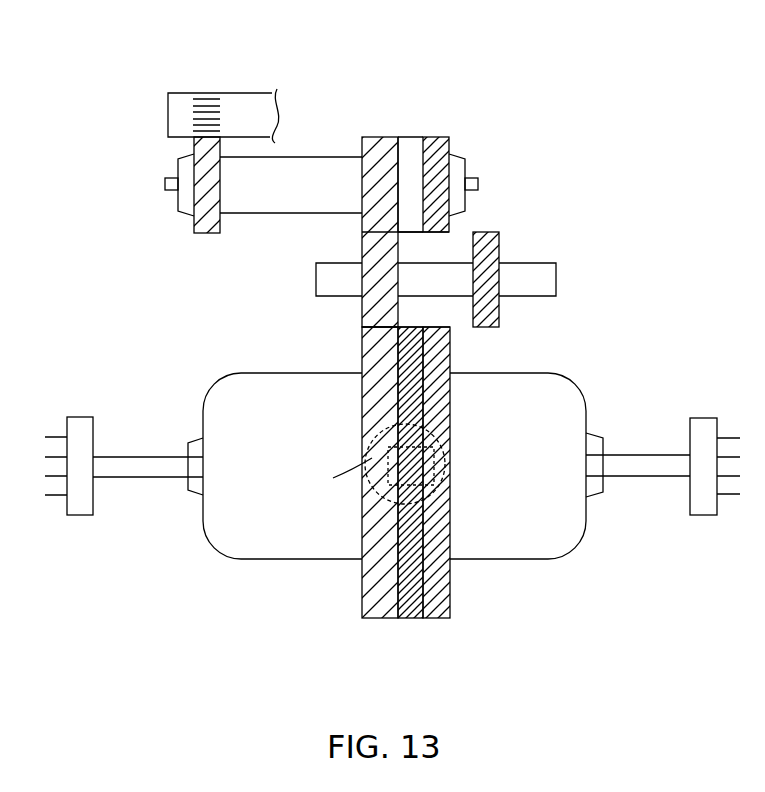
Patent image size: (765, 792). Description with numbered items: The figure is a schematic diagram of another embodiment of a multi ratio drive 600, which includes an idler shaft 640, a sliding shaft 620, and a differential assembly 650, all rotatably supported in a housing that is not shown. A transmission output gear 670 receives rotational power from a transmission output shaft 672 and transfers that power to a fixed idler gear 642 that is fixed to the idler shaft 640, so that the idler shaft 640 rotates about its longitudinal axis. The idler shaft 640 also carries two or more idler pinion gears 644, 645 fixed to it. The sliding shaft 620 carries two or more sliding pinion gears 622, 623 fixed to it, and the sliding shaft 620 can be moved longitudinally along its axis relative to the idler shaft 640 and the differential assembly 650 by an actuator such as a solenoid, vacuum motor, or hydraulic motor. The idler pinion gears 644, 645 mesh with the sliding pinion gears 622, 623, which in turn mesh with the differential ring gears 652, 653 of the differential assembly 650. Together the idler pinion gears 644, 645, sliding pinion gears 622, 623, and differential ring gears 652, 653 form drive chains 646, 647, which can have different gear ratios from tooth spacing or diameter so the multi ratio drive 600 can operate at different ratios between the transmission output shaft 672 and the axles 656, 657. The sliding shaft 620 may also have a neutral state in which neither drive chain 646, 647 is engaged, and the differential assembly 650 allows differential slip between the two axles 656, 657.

The multi ratio drive 600 is at (530, 55).
The transmission output gear 670 is at (202, 97).
The transmission output shaft 672 is at (257, 103).
The idler shaft 640 is at (183, 193).
The fixed idler gear 642 is at (200, 220).
The idler pinion gear 644 is at (390, 147).
The idler pinion gear 645 is at (435, 143).
The sliding shaft 620 is at (323, 278).
The sliding pinion gear 622 is at (367, 317).
The sliding pinion gear 623 is at (493, 250).
The differential assembly 650 is at (537, 385).
The differential ring gear 652 is at (380, 600).
The differential ring gear 653 is at (437, 587).
The axle 656 is at (128, 466).
The axle 657 is at (637, 462).
The drive chain 646 is at (378, 645).
The drive chain 647 is at (432, 645).